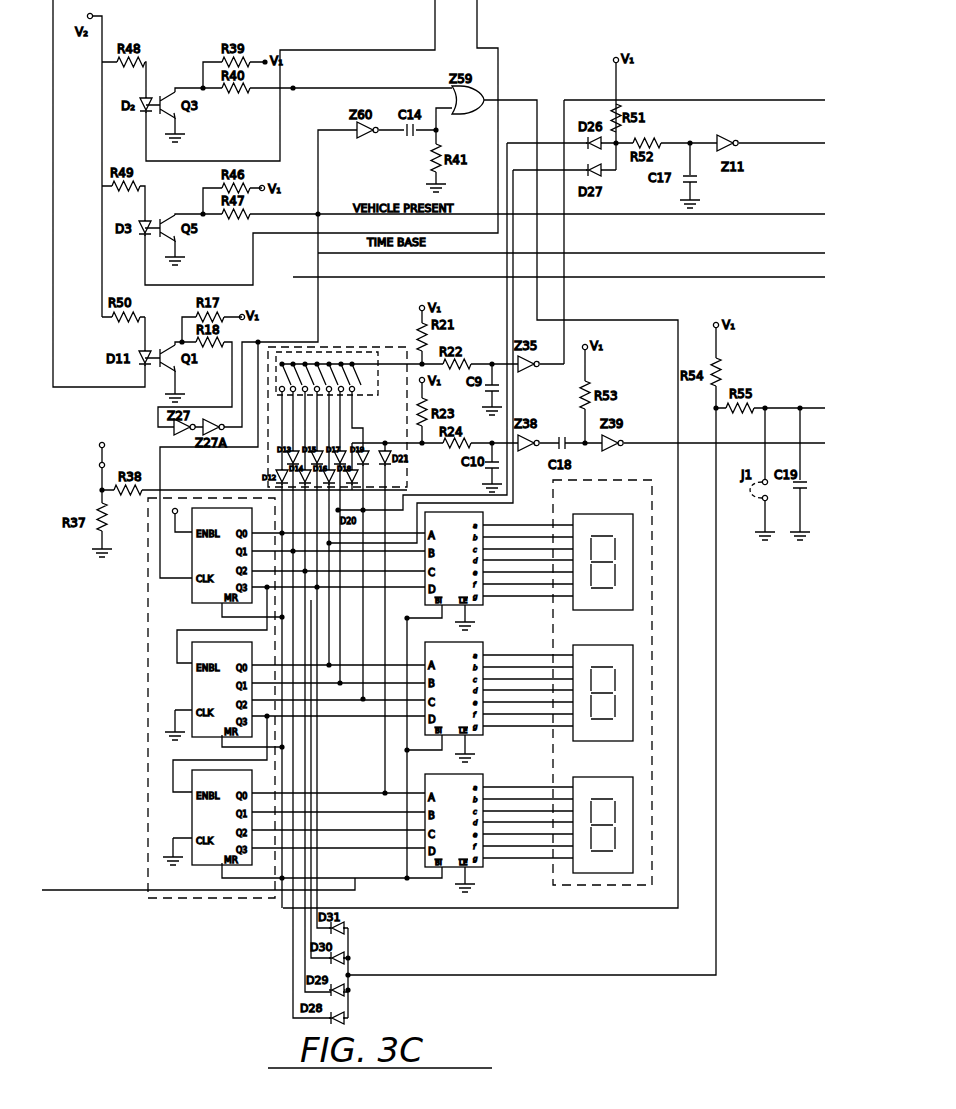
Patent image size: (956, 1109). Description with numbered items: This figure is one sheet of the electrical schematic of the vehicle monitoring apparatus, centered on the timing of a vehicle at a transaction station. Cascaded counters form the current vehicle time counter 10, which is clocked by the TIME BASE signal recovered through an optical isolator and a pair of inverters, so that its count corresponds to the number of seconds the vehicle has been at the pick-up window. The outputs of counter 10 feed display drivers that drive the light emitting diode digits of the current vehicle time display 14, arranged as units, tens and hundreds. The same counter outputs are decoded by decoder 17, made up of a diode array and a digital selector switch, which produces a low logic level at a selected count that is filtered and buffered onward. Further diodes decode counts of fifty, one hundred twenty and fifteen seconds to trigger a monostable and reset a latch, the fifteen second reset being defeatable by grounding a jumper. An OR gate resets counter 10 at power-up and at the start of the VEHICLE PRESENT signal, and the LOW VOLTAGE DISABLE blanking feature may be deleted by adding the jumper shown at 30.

The current vehicle time counter 10 is at (146, 703).
The current vehicle time display 14 is at (655, 627).
The decoder 17 is at (372, 347).
The jumper 30 is at (98, 462).